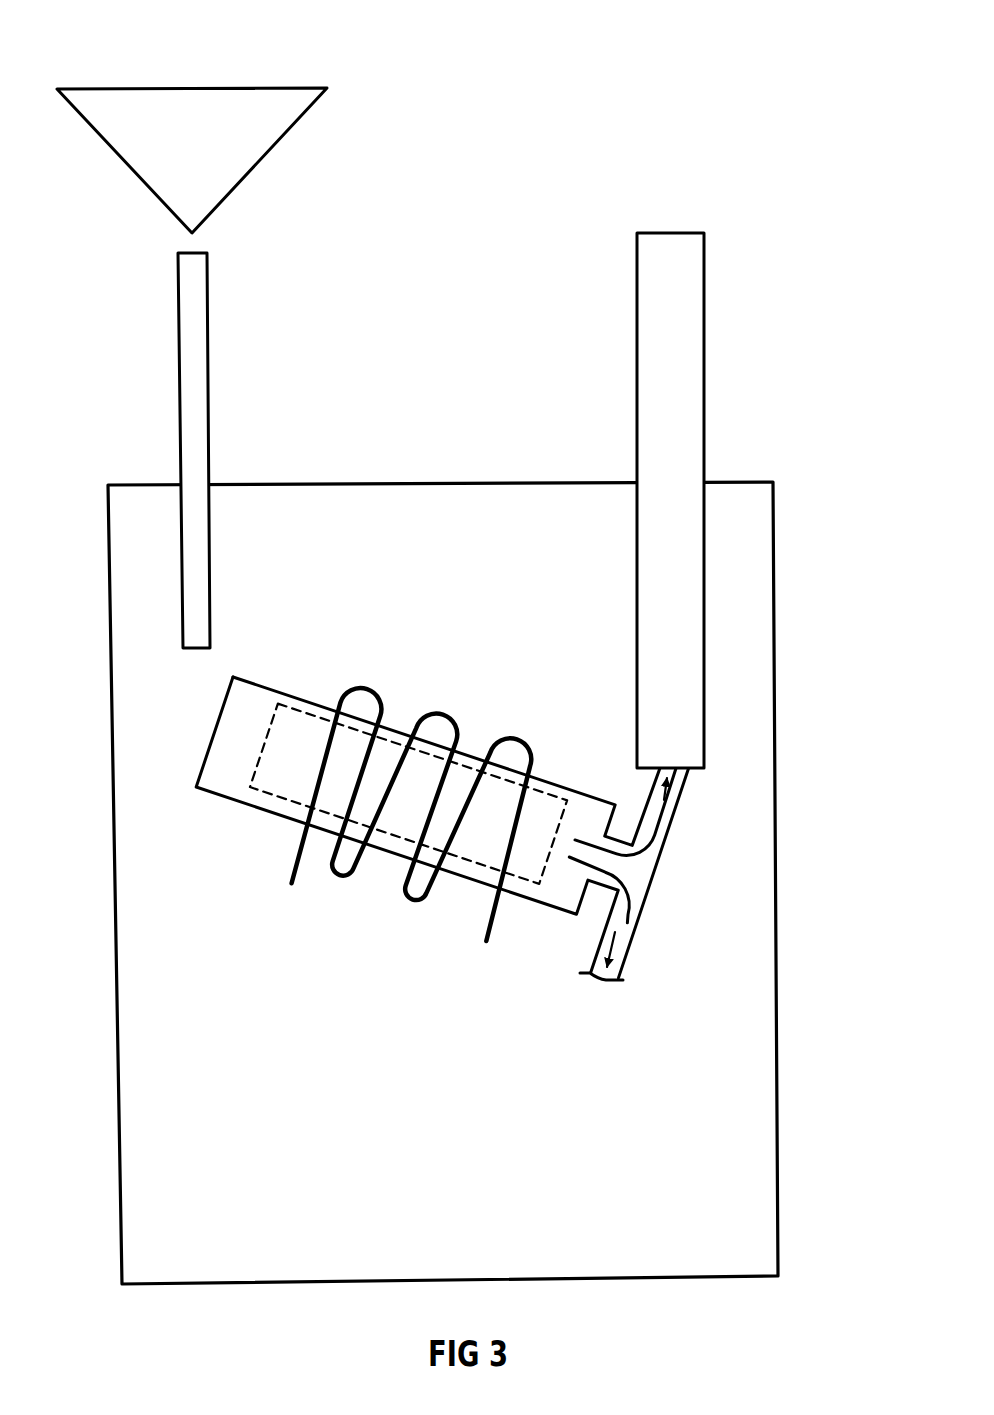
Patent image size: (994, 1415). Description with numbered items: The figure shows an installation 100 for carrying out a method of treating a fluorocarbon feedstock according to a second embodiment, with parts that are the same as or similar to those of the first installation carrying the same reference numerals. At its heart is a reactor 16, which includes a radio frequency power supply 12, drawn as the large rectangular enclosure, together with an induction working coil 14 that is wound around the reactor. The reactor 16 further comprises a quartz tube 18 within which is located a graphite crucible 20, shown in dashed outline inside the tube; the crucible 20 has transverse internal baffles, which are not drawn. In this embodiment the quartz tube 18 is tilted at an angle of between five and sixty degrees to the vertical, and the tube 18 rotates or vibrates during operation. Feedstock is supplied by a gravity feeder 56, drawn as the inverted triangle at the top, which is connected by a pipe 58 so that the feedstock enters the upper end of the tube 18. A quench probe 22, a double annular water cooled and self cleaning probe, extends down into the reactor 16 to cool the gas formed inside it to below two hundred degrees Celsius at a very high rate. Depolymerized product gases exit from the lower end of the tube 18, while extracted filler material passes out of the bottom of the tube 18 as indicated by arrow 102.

The radio frequency power supply 12 is at (472, 1103).
The induction working coil 14 is at (415, 815).
The reactor 16 is at (451, 704).
The quartz tube 18 is at (430, 800).
The graphite crucible 20 is at (408, 794).
The quench probe 22 is at (673, 332).
The gravity feeder 56 is at (237, 133).
The pipe 58 is at (190, 363).
The installation 100 is at (712, 125).
The arrow 102 is at (653, 873).